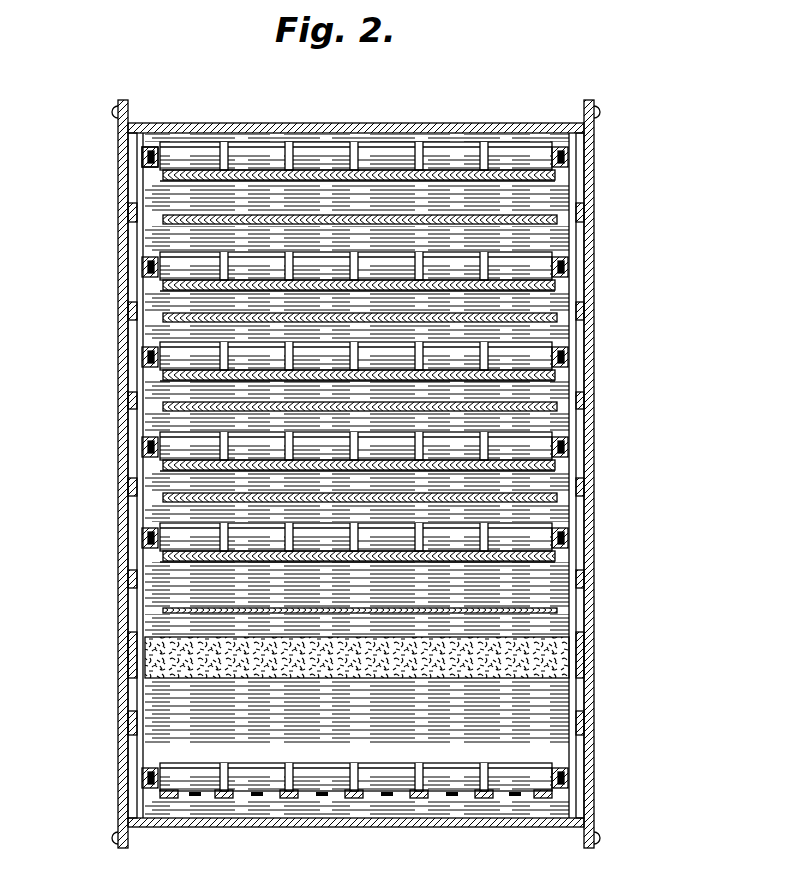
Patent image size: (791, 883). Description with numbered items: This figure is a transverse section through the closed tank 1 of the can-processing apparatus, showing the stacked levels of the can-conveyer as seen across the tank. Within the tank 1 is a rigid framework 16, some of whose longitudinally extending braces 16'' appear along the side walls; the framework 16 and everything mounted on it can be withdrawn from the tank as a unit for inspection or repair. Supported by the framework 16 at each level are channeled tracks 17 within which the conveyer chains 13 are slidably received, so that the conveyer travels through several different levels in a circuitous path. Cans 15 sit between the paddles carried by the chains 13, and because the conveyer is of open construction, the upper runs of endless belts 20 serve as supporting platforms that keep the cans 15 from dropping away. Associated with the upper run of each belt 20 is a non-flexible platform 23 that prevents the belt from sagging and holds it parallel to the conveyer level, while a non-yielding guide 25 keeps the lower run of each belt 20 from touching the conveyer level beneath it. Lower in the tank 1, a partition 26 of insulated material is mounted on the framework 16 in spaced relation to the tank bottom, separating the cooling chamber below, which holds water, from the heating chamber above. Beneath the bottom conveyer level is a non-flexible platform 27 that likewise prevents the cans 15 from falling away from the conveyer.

The closed tank 1 is at (410, 128).
The chains 13 is at (145, 160).
The cans 15 is at (205, 150).
The framework 16 is at (329, 475).
The longitudinally extending braces 16'' is at (360, 469).
The channeled track 17 is at (560, 176).
The endless belts 20 is at (552, 180).
The non-flexible platform 23 is at (160, 290).
The non-yielding guide 25 is at (557, 220).
The partition 26 is at (160, 650).
The non-flexible platform 27 is at (325, 800).